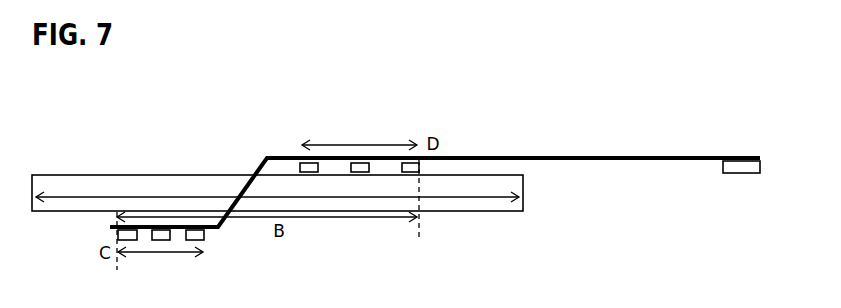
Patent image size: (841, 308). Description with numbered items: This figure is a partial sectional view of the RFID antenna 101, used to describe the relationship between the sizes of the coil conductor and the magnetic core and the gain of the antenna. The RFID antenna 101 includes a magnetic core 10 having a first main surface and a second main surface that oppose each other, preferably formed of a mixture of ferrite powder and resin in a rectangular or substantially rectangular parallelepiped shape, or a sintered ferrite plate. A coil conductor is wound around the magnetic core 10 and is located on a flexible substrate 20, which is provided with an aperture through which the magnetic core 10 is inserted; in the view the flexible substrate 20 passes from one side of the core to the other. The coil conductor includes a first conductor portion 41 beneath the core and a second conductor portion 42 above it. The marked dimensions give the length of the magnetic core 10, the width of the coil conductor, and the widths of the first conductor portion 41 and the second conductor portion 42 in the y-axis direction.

The RFID antenna 101 is at (555, 65).
The magnetic core 10 is at (87, 175).
The flexible substrate 20 is at (267, 155).
The first conductor portion 41 is at (210, 260).
The second conductor portion 42 is at (295, 133).